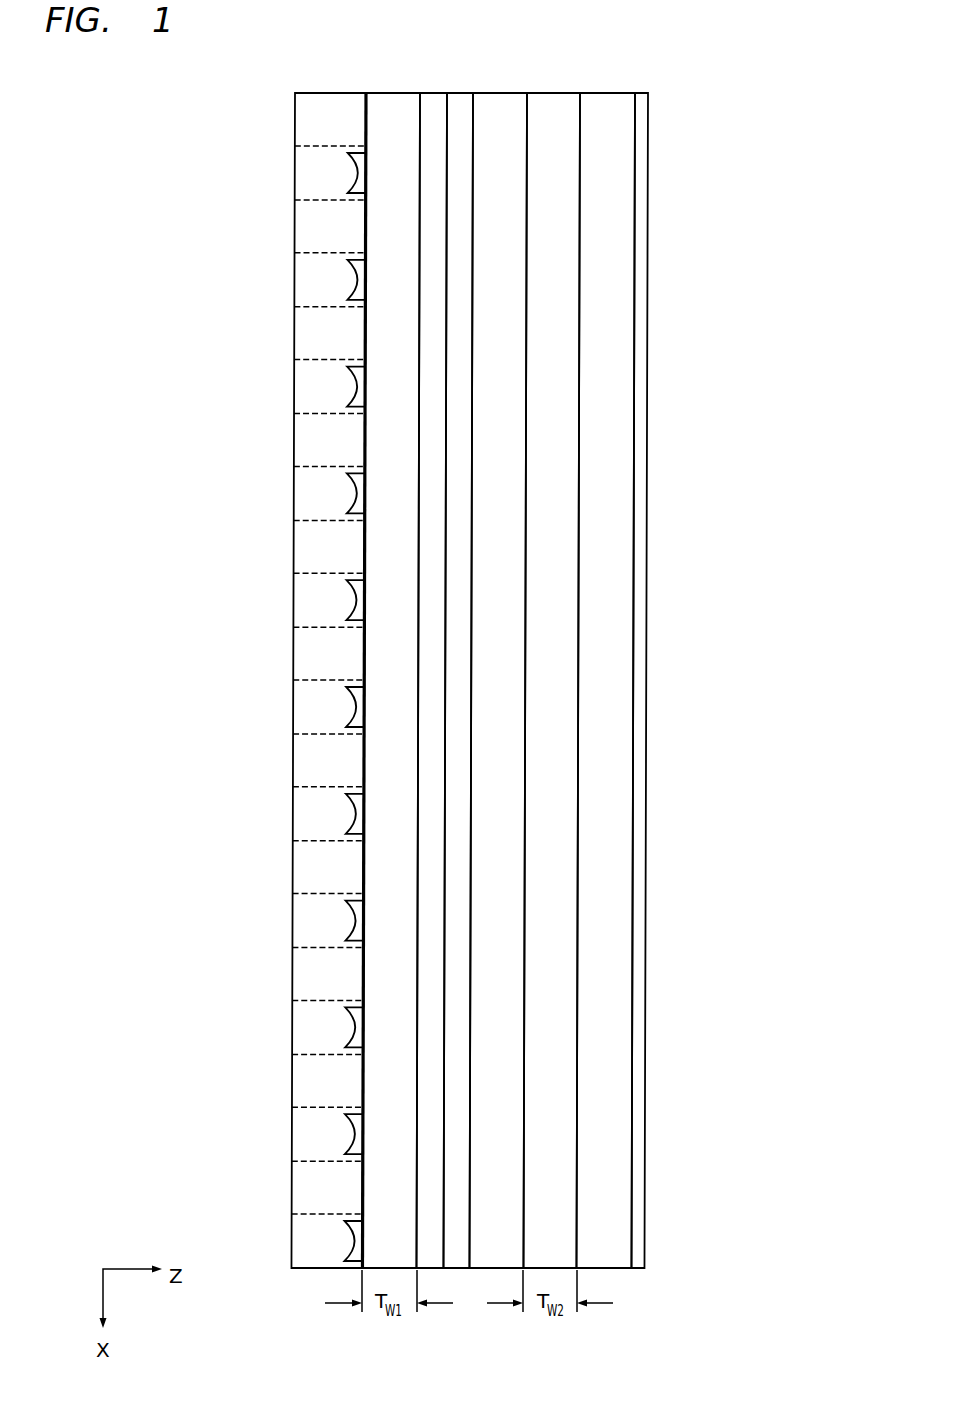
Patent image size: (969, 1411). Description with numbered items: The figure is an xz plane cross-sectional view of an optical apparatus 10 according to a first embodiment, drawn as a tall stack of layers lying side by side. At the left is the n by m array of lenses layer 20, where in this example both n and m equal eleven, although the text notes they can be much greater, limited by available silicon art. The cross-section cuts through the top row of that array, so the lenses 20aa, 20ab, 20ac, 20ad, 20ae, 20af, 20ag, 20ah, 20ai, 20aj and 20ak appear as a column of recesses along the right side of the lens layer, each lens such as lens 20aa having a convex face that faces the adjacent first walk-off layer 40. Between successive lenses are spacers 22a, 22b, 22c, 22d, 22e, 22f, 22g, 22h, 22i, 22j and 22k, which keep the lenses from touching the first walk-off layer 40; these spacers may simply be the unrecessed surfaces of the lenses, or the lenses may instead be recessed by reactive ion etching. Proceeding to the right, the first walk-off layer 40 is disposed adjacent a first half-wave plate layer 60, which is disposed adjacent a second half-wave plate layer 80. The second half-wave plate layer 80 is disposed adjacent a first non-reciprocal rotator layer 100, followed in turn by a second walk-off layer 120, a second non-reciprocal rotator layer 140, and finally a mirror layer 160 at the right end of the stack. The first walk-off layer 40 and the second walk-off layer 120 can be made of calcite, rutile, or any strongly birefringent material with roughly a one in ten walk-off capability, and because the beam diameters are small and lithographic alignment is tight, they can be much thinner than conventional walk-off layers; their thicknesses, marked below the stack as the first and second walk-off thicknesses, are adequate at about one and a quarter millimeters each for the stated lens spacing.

The optical apparatus 10 is at (758, 81).
The n by m array of lenses layer 20 is at (335, 93).
The first walk-off layer 40 is at (393, 93).
The first half-wave plate layer 60 is at (432, 93).
The second half-wave plate layer 80 is at (462, 93).
The first non-reciprocal rotator layer 100 is at (500, 93).
The second walk-off layer 120 is at (553, 93).
The second non-reciprocal rotator layer 140 is at (608, 93).
The mirror layer 160 is at (645, 93).
The spacer 22a is at (308, 119).
The spacer 22b is at (308, 226).
The spacer 22c is at (308, 333).
The spacer 22d is at (308, 440).
The spacer 22e is at (308, 547).
The spacer 22f is at (308, 654).
The spacer 22g is at (308, 761).
The spacer 22h is at (308, 868).
The spacer 22i is at (308, 975).
The spacer 22j is at (308, 1082).
The spacer 22k is at (308, 1189).
The lens 20aa is at (352, 173).
The lens 20ab is at (352, 280).
The lens 20ac is at (352, 387).
The lens 20ad is at (352, 494).
The lens 20ae is at (352, 601).
The lens 20af is at (352, 708).
The lens 20ag is at (352, 815).
The lens 20ah is at (352, 922).
The lens 20ai is at (352, 1029).
The lens 20aj is at (352, 1136).
The lens 20ak is at (352, 1243).